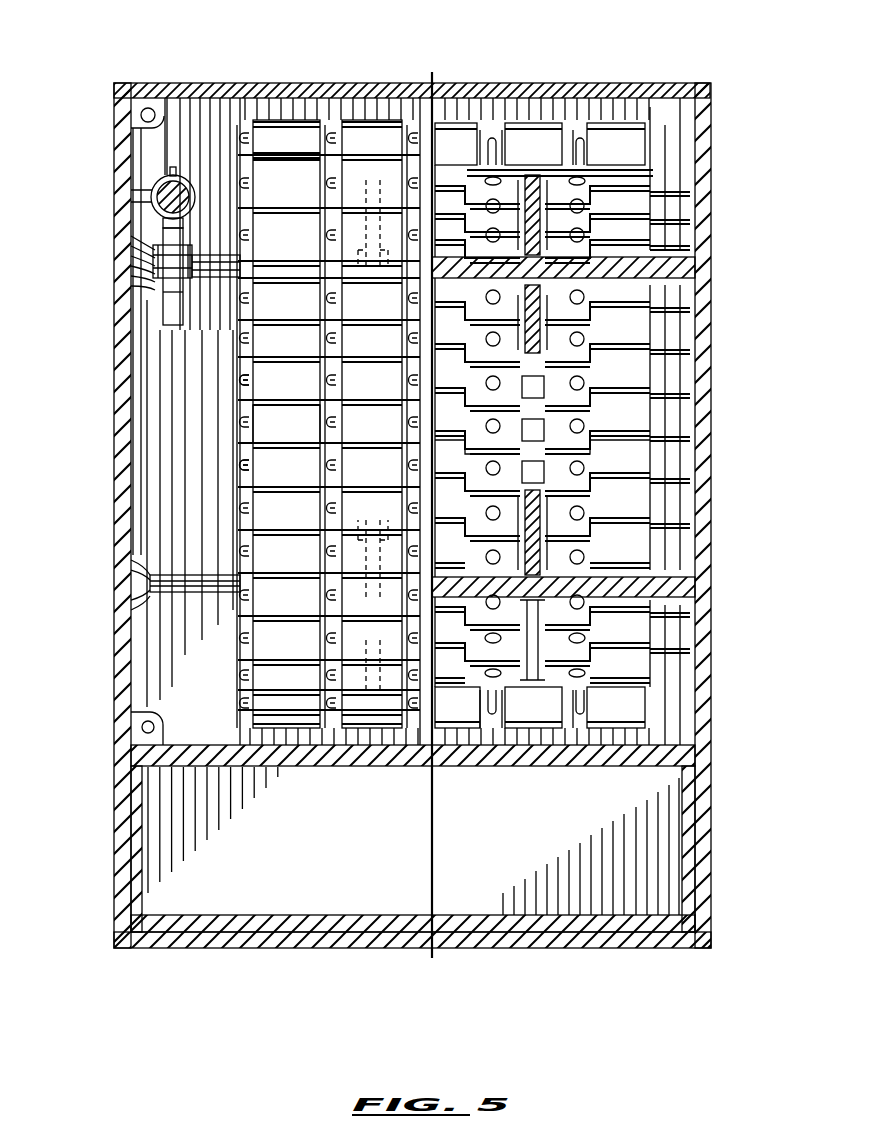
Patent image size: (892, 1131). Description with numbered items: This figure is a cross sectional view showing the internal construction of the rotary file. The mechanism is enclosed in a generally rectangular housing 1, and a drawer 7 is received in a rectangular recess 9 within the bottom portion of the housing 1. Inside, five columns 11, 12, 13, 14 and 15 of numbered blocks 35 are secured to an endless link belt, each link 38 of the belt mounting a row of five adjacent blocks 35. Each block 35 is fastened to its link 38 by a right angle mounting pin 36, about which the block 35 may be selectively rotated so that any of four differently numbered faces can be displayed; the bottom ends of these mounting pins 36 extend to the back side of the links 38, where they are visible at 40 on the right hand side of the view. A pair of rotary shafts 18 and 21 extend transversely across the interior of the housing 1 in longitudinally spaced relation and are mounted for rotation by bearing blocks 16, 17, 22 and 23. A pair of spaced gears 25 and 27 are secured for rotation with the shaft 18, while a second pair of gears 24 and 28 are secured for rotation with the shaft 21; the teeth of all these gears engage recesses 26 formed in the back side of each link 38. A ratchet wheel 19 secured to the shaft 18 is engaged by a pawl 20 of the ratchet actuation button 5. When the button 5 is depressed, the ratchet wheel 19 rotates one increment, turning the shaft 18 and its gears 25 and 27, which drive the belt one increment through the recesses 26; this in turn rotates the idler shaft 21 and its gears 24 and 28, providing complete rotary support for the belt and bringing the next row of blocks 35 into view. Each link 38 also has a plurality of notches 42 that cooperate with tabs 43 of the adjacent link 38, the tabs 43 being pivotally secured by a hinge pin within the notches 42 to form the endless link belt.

The housing 1 is at (282, 117).
The ratchet actuation button 5 is at (151, 200).
The drawer 7 is at (645, 928).
The rectangular recess 9 is at (700, 905).
The column of blocks 11 is at (273, 118).
The column of blocks 12 is at (378, 120).
The column of blocks 13 is at (447, 122).
The column of blocks 14 is at (525, 123).
The column of blocks 15 is at (605, 122).
The bearing block 16 is at (140, 262).
The bearing block 17 is at (695, 262).
The rotary shaft 18 is at (214, 283).
The ratchet wheel 19 is at (173, 303).
The pawl 20 is at (160, 222).
The idler shaft 21 is at (190, 570).
The bearing block 22 is at (148, 595).
The bearing block 23 is at (690, 582).
The gear 24 is at (532, 637).
The gear 25 is at (535, 305).
The recess 26 is at (548, 392).
The gear 27 is at (363, 297).
The gear 28 is at (365, 660).
The block 35 is at (315, 438).
The right angle mounting pin 36 is at (250, 373).
The link 38 is at (250, 482).
The bottom ends of mounting pins 40 is at (486, 424).
The notch 42 is at (632, 440).
The tab 43 is at (445, 437).